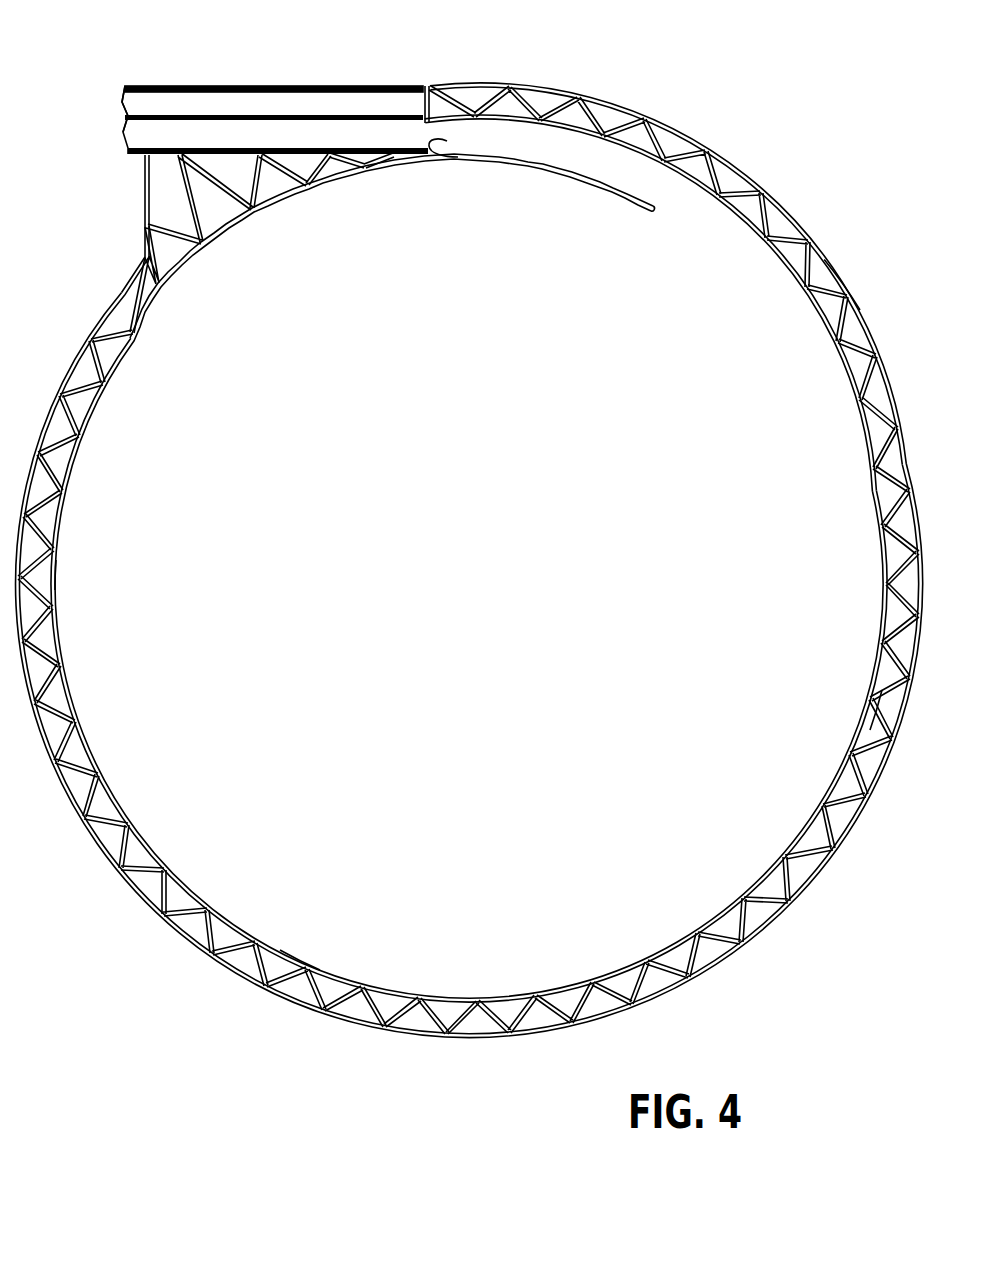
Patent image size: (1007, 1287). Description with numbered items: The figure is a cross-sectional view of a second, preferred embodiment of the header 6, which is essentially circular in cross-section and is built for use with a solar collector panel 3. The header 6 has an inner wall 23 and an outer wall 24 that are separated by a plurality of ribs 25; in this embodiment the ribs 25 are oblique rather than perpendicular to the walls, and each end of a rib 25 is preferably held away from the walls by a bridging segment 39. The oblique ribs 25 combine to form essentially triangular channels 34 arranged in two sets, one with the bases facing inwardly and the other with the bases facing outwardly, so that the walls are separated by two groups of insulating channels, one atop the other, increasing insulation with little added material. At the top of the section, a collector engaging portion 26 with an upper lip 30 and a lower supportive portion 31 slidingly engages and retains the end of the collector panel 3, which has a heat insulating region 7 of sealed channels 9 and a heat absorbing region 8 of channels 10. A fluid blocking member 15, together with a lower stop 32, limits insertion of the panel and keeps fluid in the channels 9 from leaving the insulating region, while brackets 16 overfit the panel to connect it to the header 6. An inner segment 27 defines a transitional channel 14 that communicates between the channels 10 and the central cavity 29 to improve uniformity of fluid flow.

The solar collector panel 3 is at (266, 85).
The header 6 is at (764, 183).
The heat insulating region 7 is at (112, 103).
The heat absorbing region 8 is at (115, 133).
The channels 9 is at (228, 102).
The channels 10 is at (143, 133).
The transitional channel 14 is at (530, 152).
The fluid blocking member 15 is at (440, 87).
The brackets 16 is at (396, 84).
The inner wall 23 is at (812, 308).
The outer wall 24 is at (842, 272).
The ribs 25 is at (42, 560).
The collector engaging portion 26 is at (362, 84).
The inner segment 27 is at (648, 212).
The central cavity 29 is at (302, 887).
The upper lip 30 is at (372, 86).
The lower supportive portion 31 is at (300, 158).
The lower stop 32 is at (460, 145).
The triangular channels 34 is at (607, 120).
The bridging segment 39 is at (890, 553).